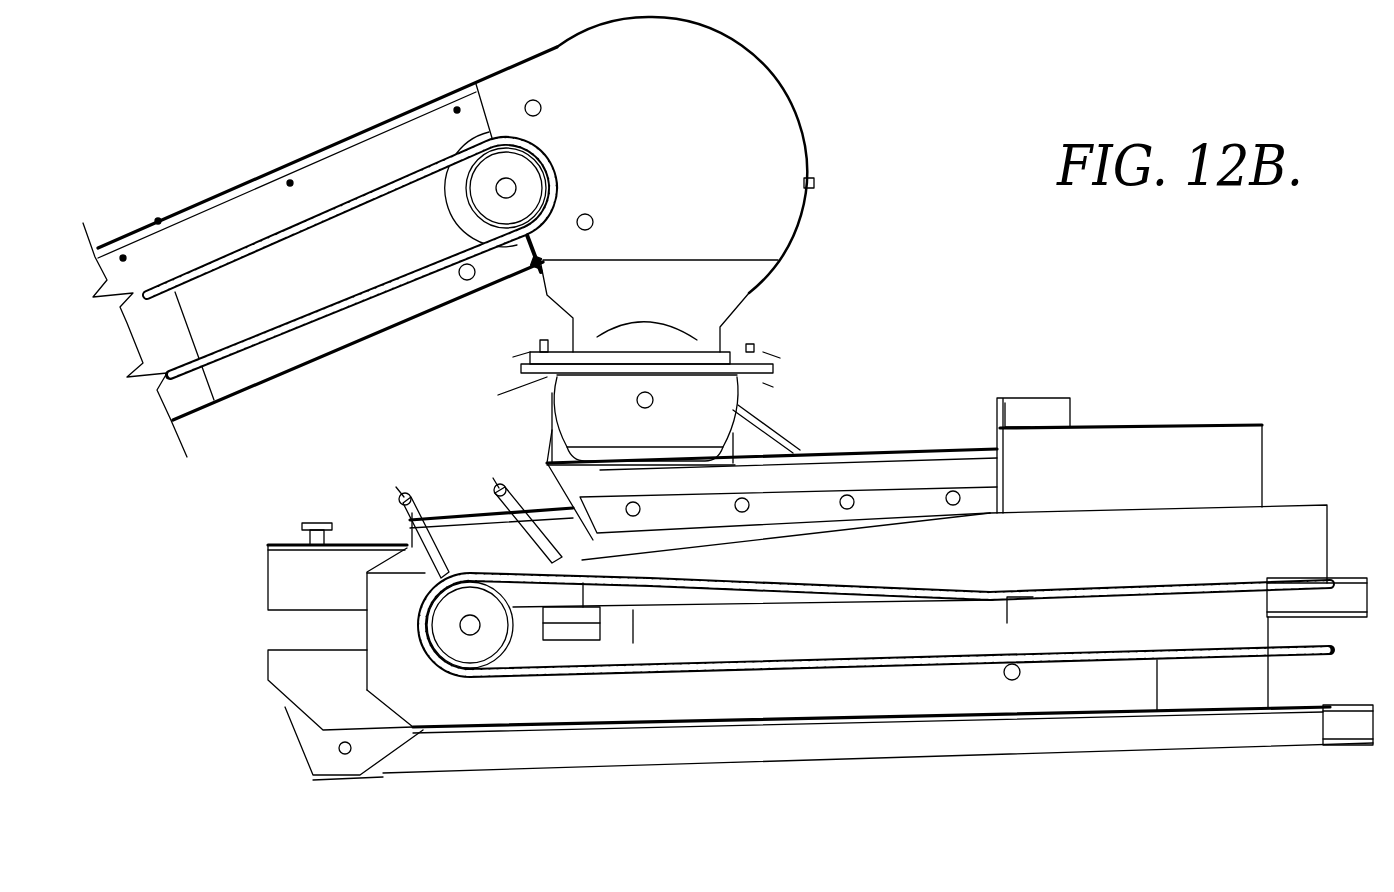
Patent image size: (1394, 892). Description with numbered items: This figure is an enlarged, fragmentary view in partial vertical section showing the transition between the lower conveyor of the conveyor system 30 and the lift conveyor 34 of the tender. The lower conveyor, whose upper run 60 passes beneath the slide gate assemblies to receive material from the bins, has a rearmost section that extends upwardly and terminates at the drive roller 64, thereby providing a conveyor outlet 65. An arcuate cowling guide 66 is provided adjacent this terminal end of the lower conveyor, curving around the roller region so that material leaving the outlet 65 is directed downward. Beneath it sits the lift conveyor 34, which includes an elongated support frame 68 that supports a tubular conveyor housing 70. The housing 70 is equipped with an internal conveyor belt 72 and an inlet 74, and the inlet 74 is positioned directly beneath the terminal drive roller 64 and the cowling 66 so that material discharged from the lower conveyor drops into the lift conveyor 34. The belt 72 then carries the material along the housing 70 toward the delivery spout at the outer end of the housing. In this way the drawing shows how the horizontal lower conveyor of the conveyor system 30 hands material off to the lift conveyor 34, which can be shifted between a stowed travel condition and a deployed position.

The conveyor system 30 is at (306, 128).
The upper run 60 is at (252, 250).
The drive roller 64 is at (527, 167).
The arcuate cowling guide 66 is at (790, 222).
The conveyor outlet 65 is at (738, 332).
The inlet 74 is at (773, 385).
The lift conveyor 34 is at (1233, 377).
The tubular conveyor housing 70 is at (1152, 427).
The internal conveyor belt 72 is at (1290, 520).
The elongated support frame 68 is at (1238, 747).